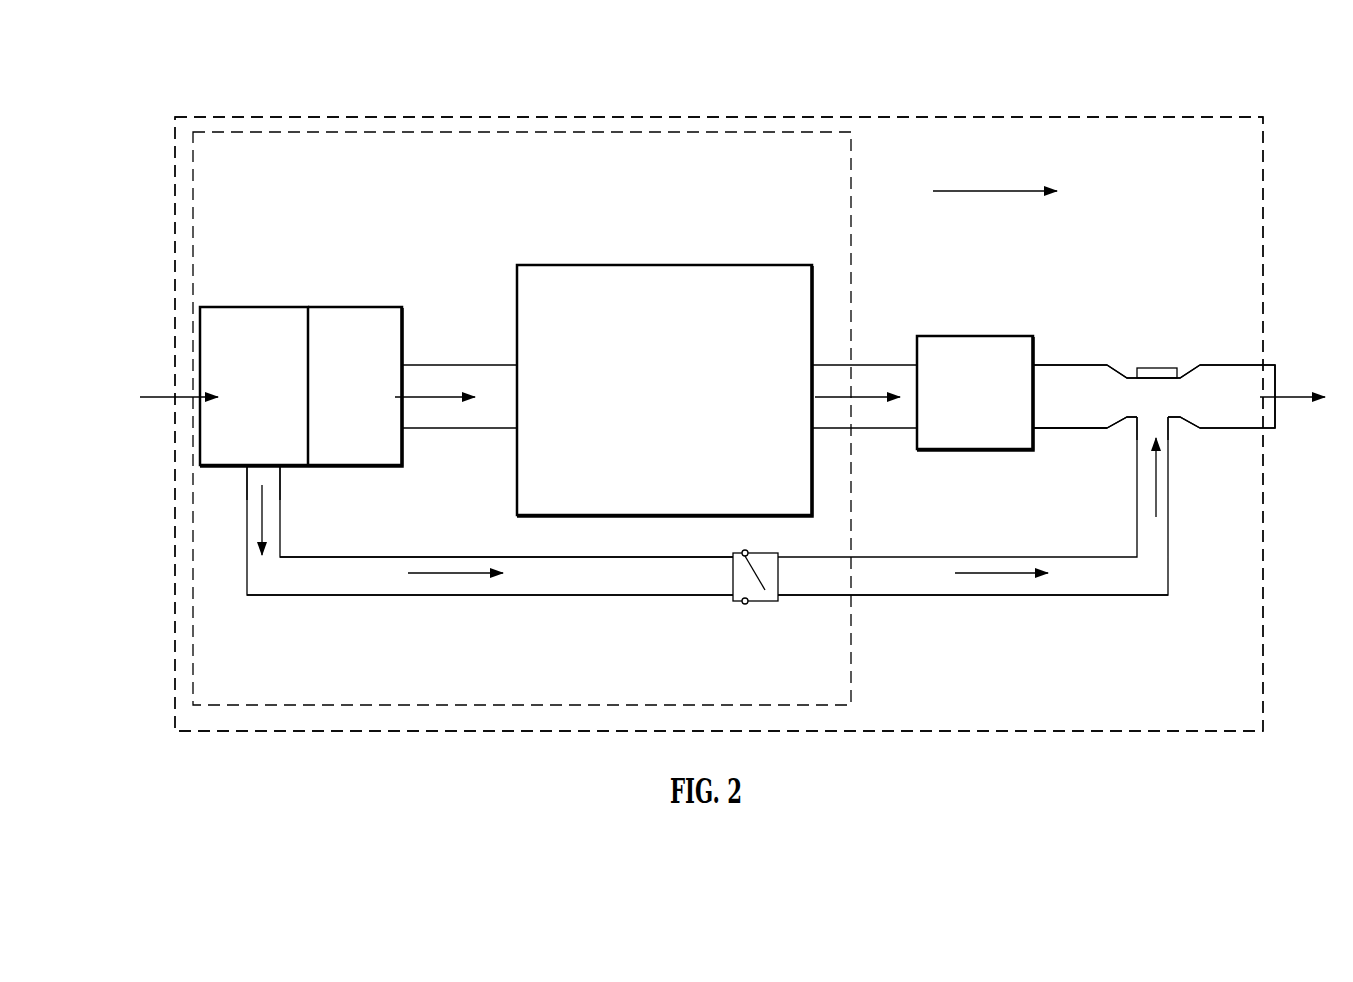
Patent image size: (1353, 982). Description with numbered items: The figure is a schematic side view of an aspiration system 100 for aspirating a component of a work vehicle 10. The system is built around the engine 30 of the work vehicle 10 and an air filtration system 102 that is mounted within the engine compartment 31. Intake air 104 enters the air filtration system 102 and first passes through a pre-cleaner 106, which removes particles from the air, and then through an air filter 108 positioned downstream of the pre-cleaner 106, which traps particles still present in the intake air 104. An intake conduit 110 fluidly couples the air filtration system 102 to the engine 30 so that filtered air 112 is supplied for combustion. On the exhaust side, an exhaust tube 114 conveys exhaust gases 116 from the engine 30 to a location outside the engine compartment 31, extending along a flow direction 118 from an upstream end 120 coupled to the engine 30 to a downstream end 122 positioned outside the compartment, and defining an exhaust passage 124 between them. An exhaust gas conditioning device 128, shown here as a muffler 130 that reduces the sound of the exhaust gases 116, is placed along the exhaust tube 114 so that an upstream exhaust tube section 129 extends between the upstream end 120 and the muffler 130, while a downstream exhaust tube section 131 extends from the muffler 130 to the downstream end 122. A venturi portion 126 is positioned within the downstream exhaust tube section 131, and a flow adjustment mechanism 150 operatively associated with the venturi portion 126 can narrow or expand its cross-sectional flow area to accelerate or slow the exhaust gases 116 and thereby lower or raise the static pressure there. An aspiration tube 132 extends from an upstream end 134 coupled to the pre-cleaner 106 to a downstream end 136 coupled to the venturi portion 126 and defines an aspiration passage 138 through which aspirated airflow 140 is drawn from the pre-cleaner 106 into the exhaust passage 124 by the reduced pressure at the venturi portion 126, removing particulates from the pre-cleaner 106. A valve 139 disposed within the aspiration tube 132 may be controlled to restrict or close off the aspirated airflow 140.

The aspiration system 100 is at (128, 135).
The work vehicle 10 is at (1203, 182).
The air filtration system 102 is at (360, 246).
The intake air 104 is at (160, 397).
The pre-cleaner 106 is at (270, 306).
The air filter 108 is at (350, 466).
The intake conduit 110 is at (440, 430).
The filtered air 112 is at (428, 392).
The engine 30 is at (733, 265).
The engine compartment 31 is at (673, 222).
The exhaust gases 116 is at (860, 395).
The flow direction 118 is at (980, 190).
The upstream end of the exhaust tube 120 is at (825, 433).
The upstream exhaust tube section 129 is at (868, 430).
The muffler 130 is at (945, 336).
The exhaust gas conditioning device 128 is at (1005, 333).
The exhaust passage 124 is at (1083, 404).
The venturi portion 126 is at (1147, 355).
The flow adjustment mechanism 150 is at (1155, 368).
The downstream exhaust tube section 131 is at (1215, 365).
The downstream end of the exhaust tube 122 is at (1280, 440).
The downstream end of the aspiration tube 136 is at (1174, 424).
The exhaust tube 114 is at (1068, 432).
The upstream end of the aspiration tube 134 is at (292, 477).
The aspiration passage 138 is at (690, 594).
The valve 139 is at (733, 583).
The aspirated airflow 140 is at (262, 517).
The aspiration tube 132 is at (1140, 597).